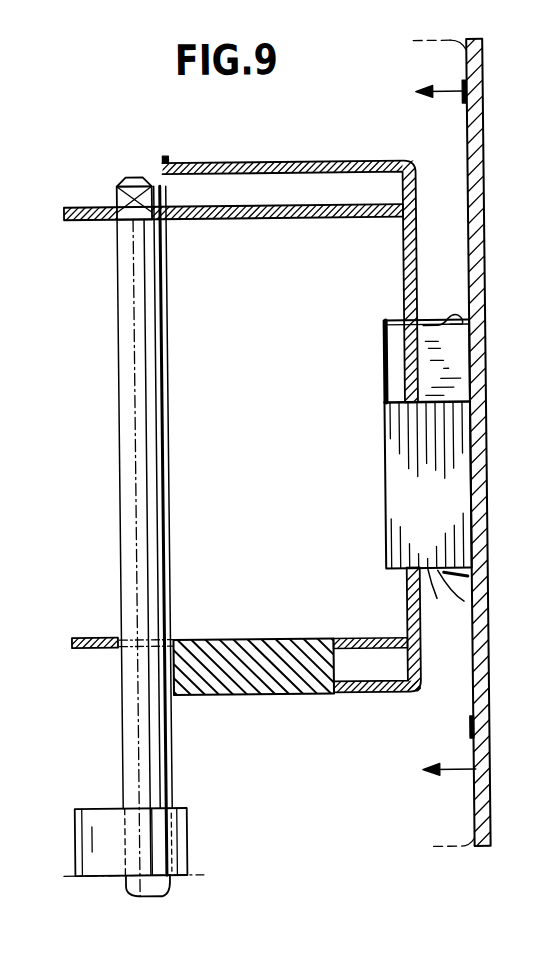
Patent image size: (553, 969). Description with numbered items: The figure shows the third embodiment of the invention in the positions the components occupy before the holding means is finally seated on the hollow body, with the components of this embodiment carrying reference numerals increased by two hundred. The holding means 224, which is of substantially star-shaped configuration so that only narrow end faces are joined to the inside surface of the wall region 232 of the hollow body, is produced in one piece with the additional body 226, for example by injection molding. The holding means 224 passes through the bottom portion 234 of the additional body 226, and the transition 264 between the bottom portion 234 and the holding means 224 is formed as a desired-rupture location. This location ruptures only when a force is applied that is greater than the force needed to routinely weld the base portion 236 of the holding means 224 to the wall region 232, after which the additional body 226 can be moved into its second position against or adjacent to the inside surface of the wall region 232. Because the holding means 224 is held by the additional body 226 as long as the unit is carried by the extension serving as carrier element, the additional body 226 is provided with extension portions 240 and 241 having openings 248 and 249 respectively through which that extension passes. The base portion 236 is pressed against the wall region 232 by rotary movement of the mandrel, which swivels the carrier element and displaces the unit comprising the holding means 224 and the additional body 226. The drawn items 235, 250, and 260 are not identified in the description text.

The holding means 224 is at (354, 340).
The additional body 226 is at (364, 161).
The wall region 232 is at (471, 215).
The bottom portion 234 is at (407, 604).
The clip 235 is at (426, 590).
The base portion 236 is at (451, 590).
The extension portion 240 is at (92, 636).
The extension portion 241 is at (83, 205).
The opening 248 is at (130, 646).
The opening 249 is at (131, 220).
The cap 250 is at (135, 171).
The spring clip 260 is at (457, 320).
The transition 264 is at (406, 403).